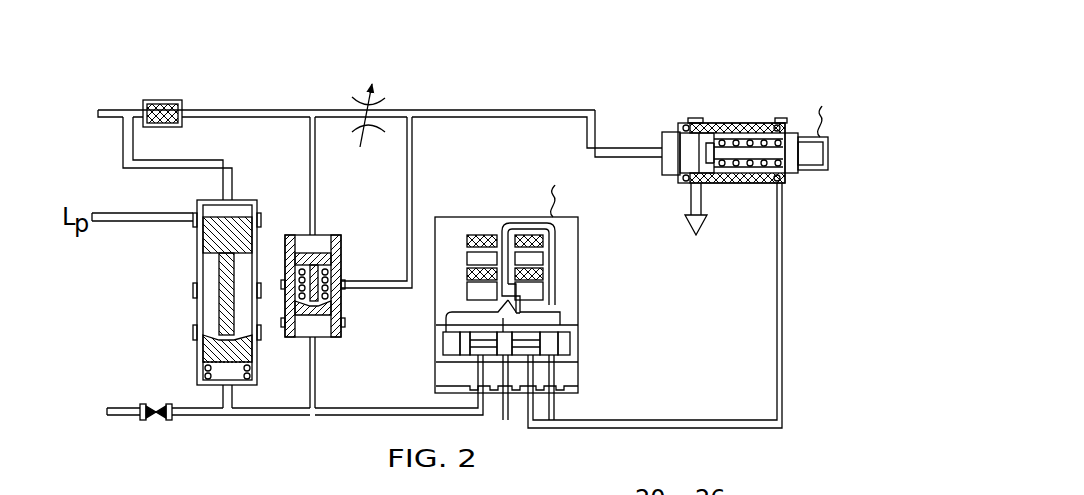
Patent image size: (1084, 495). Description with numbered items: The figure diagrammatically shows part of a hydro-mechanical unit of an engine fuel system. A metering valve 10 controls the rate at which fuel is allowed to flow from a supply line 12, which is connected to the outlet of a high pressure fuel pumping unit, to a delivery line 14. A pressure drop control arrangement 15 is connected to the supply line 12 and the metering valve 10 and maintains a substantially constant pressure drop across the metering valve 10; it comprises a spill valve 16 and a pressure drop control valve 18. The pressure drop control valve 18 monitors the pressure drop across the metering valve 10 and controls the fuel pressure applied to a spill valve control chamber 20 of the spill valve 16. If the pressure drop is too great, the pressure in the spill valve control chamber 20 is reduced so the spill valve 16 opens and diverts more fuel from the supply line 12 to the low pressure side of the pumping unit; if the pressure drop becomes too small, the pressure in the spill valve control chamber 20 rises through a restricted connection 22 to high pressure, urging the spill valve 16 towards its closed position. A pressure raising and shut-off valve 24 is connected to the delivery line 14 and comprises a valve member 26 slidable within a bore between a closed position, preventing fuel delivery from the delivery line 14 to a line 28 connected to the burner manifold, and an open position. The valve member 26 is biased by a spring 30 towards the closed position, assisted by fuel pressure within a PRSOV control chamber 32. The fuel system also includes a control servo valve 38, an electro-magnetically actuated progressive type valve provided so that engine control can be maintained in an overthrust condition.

The metering valve 10 is at (363, 78).
The supply line 12 is at (247, 108).
The delivery line 14 is at (490, 109).
The pressure drop control arrangement 15 is at (93, 298).
The spill valve 16 is at (190, 241).
The pressure drop control valve 18 is at (356, 242).
The spill valve control chamber 20 is at (207, 378).
The restricted connection 22 is at (146, 421).
The pressure raising and shut-off valve 24 is at (711, 108).
The valve member 26 is at (735, 122).
The line 28 is at (688, 198).
The spring 30 is at (749, 122).
The PRSOV control chamber 32 is at (770, 122).
The control servo valve 38 is at (588, 316).